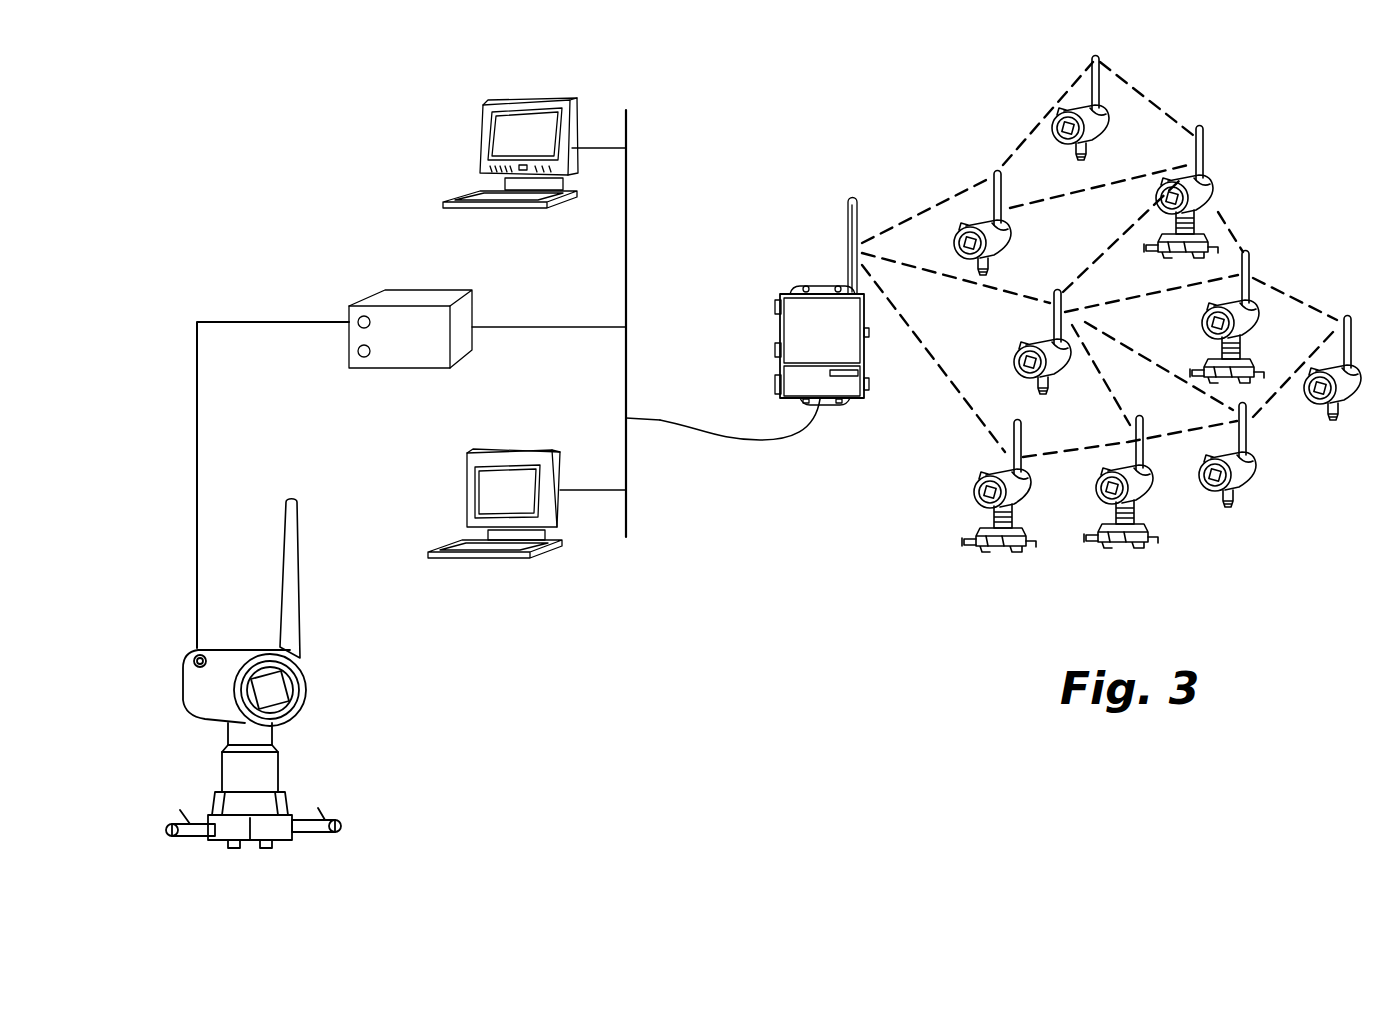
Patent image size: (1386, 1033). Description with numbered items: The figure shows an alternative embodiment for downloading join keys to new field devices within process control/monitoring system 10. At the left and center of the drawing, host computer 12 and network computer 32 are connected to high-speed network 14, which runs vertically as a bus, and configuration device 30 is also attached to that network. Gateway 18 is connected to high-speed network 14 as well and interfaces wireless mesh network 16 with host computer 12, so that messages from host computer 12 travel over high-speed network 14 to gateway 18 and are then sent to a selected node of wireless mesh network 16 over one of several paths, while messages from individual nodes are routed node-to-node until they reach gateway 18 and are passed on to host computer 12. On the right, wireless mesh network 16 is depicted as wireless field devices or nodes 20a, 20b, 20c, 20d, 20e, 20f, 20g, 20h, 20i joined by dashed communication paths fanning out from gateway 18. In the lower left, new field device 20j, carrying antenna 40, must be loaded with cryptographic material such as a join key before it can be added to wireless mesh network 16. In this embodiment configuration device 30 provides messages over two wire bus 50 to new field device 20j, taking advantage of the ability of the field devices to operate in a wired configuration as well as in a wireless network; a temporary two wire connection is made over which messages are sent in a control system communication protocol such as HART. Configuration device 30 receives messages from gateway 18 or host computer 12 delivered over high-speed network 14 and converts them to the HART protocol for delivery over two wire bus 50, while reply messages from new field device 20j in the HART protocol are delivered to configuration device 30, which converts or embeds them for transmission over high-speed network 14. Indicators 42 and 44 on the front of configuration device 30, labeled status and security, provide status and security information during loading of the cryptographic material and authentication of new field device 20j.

The process control/monitoring system 10 is at (322, 192).
The host computer 12 is at (485, 129).
The high-speed network 14 is at (628, 186).
The wireless mesh network 16 is at (916, 522).
The gateway 18 is at (775, 333).
The wireless field device 20a is at (990, 241).
The wireless field device 20b is at (1058, 360).
The wireless field device 20c is at (1020, 492).
The wireless field device 20d is at (1090, 127).
The wireless field device 20e is at (1146, 488).
The wireless field device 20f is at (1208, 193).
The wireless field device 20g is at (1245, 322).
The wireless field device 20h is at (1243, 472).
The wireless field device 20i is at (1347, 383).
The new field device 20j is at (290, 673).
The configuration device 30 is at (387, 323).
The network computer 32 is at (456, 523).
The antenna 40 is at (298, 598).
The status indicator 42 is at (360, 329).
The security indicator 44 is at (364, 358).
The two wire bus 50 is at (276, 322).